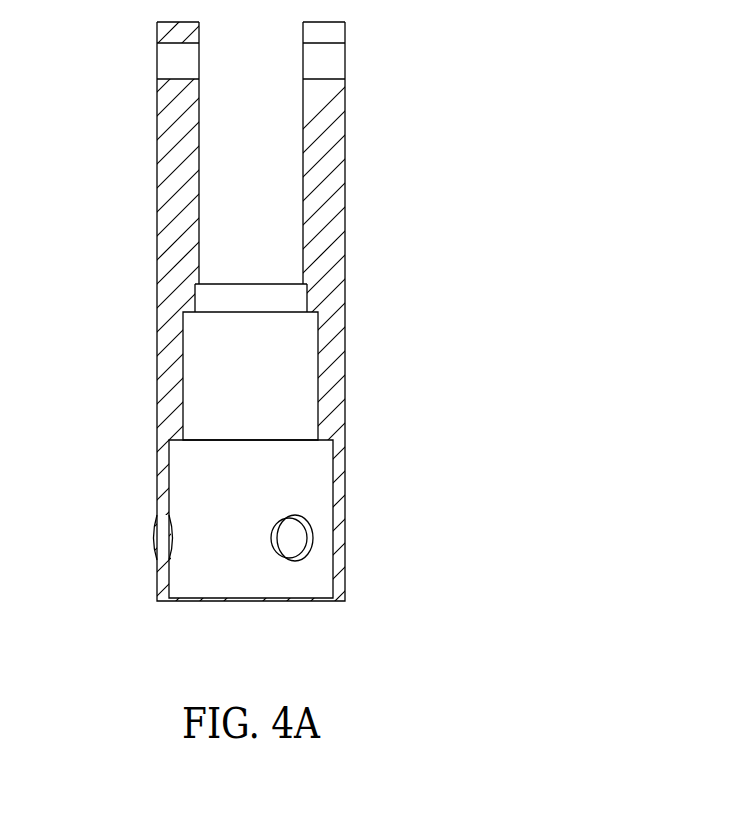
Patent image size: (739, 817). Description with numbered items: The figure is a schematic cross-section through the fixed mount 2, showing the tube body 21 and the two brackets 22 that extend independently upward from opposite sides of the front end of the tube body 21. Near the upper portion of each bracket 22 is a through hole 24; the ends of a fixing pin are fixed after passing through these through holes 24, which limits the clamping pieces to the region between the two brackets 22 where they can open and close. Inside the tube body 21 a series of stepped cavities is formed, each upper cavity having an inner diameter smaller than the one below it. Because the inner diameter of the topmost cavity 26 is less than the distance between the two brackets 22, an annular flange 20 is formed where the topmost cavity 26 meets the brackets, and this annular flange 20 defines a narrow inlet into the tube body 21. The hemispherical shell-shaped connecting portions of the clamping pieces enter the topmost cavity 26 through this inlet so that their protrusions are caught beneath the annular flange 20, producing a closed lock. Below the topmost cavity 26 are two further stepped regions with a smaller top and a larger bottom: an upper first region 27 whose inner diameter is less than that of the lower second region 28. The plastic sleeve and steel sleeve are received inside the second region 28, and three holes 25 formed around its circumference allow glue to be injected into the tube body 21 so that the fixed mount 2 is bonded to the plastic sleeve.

The fixed mount 2 is at (150, 160).
The annular flange 20 is at (305, 283).
The tube body 21 is at (172, 407).
The bracket 22 is at (322, 173).
The through hole 24 is at (325, 61).
The hole 25 is at (298, 545).
The topmost cavity 26 is at (207, 297).
The first region 27 is at (290, 378).
The second region 28 is at (312, 483).